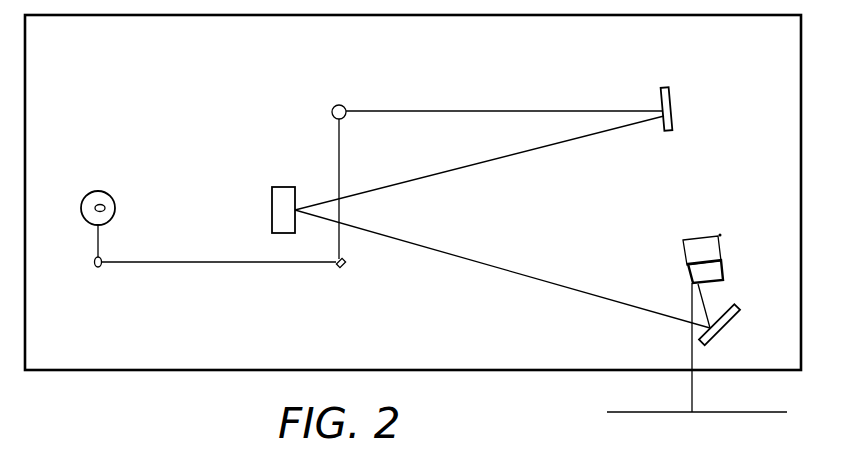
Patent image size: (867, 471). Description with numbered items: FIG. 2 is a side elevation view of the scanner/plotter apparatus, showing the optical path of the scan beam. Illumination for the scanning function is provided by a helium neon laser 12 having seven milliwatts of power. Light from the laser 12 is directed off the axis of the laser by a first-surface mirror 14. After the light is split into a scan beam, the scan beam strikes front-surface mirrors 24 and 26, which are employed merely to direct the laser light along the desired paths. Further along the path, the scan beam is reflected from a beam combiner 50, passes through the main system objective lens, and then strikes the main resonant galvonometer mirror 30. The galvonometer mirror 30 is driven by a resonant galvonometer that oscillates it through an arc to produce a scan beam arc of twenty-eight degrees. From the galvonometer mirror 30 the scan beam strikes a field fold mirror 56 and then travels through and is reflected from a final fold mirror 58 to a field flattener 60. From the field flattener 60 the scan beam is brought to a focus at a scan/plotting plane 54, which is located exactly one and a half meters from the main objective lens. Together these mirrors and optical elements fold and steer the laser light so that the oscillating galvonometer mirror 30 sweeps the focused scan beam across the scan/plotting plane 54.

The helium neon laser 12 is at (102, 192).
The first-surface mirror 14 is at (105, 209).
The front-surface mirror 24 is at (98, 267).
The front-surface mirror 26 is at (345, 268).
The main resonant galvonometer mirror 30 is at (668, 97).
The beam combiner 50 is at (343, 104).
The scan/plotting plane 54 is at (727, 412).
The field fold mirror 56 is at (283, 187).
The final fold mirror 58 is at (737, 308).
The field flattener 60 is at (708, 252).